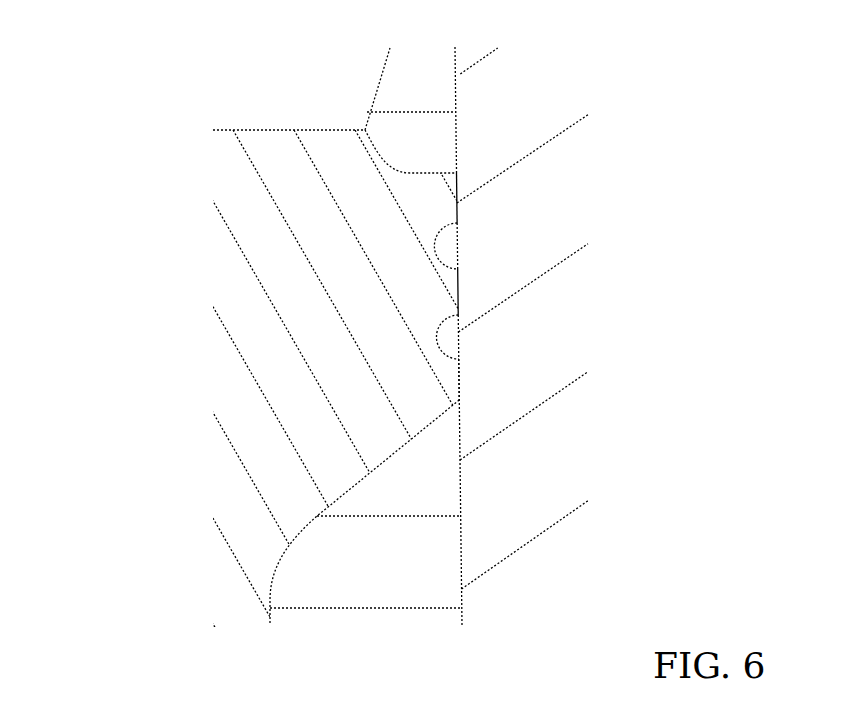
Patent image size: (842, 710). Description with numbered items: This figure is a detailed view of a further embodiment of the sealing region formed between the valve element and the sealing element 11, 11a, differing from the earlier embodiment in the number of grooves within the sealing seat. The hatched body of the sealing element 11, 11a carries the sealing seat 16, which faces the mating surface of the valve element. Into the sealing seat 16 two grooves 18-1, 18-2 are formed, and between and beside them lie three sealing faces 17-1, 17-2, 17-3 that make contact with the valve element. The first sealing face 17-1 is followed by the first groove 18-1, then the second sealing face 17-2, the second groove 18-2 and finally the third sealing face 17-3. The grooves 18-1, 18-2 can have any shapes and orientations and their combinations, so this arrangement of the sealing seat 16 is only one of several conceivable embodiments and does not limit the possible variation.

The sealing element 11 is at (352, 375).
The sealing element 11a is at (253, 190).
The sealing seat 16 is at (584, 290).
The sealing face 17-1 is at (460, 213).
The sealing face 17-2 is at (460, 292).
The sealing face 17-3 is at (460, 382).
The groove 18-1 is at (457, 247).
The groove 18-2 is at (458, 337).